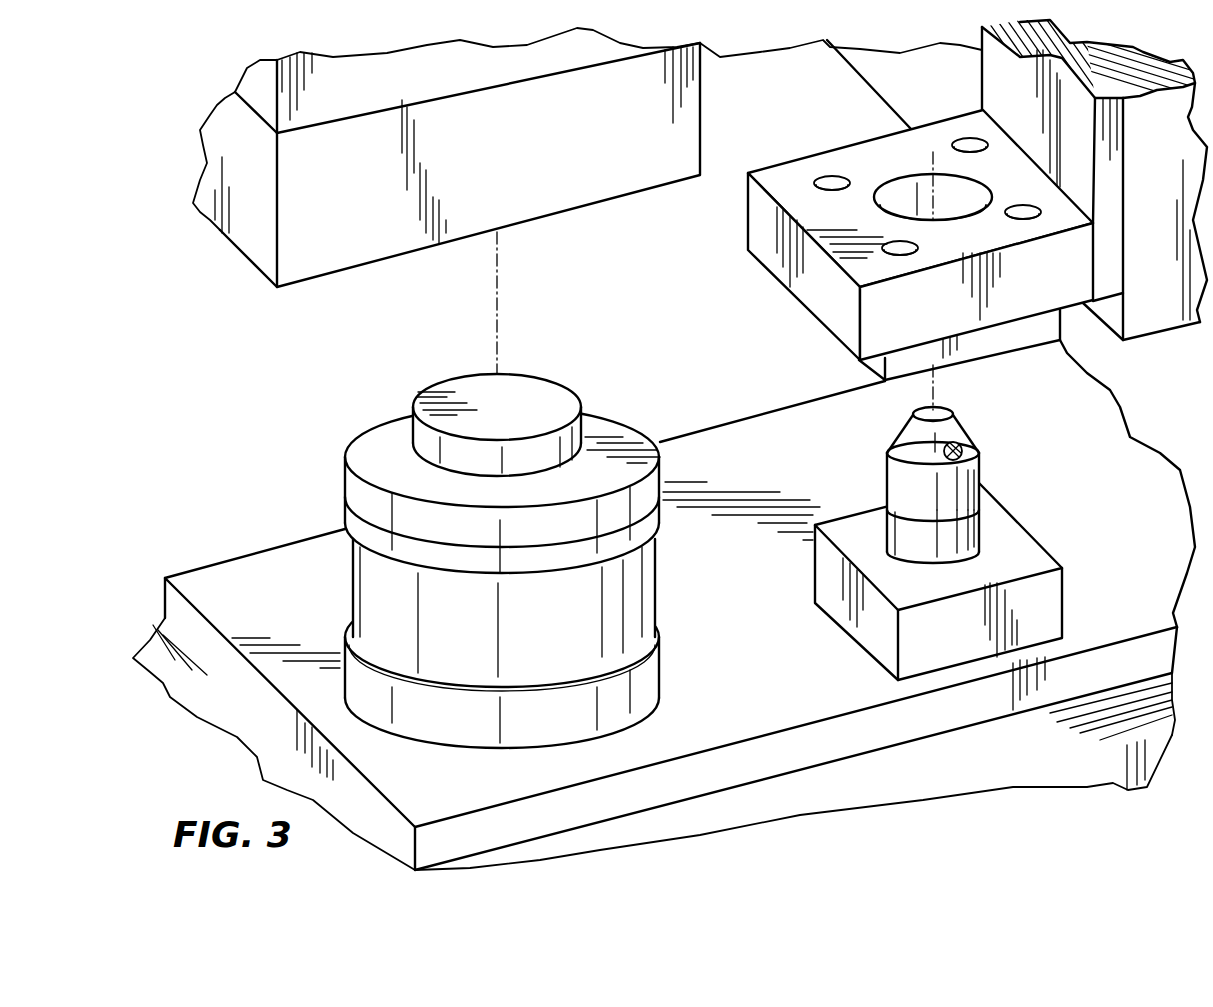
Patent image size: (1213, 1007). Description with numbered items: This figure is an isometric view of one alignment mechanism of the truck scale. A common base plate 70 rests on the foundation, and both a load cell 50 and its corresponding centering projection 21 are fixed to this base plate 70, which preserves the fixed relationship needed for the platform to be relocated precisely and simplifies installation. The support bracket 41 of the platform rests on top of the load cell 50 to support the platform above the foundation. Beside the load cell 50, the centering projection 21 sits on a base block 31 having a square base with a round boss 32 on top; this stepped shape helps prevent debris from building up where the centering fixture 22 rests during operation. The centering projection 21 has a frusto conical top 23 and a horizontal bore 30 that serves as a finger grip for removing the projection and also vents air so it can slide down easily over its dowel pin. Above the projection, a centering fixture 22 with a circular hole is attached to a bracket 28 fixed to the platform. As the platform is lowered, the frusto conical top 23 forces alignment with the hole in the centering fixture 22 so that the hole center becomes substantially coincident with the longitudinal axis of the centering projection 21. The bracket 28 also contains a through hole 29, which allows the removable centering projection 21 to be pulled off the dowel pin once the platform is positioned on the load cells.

The centering projection 21 is at (963, 487).
The centering fixture 22 is at (1012, 333).
The frusto conical top 23 is at (967, 428).
The bracket 28 is at (915, 302).
The through hole 29 is at (893, 200).
The horizontal bore 30 is at (963, 451).
The base block 31 is at (1053, 598).
The round boss 32 is at (963, 528).
The support bracket 41 is at (520, 155).
The load cell 50 is at (413, 610).
The base plate 70 is at (752, 618).